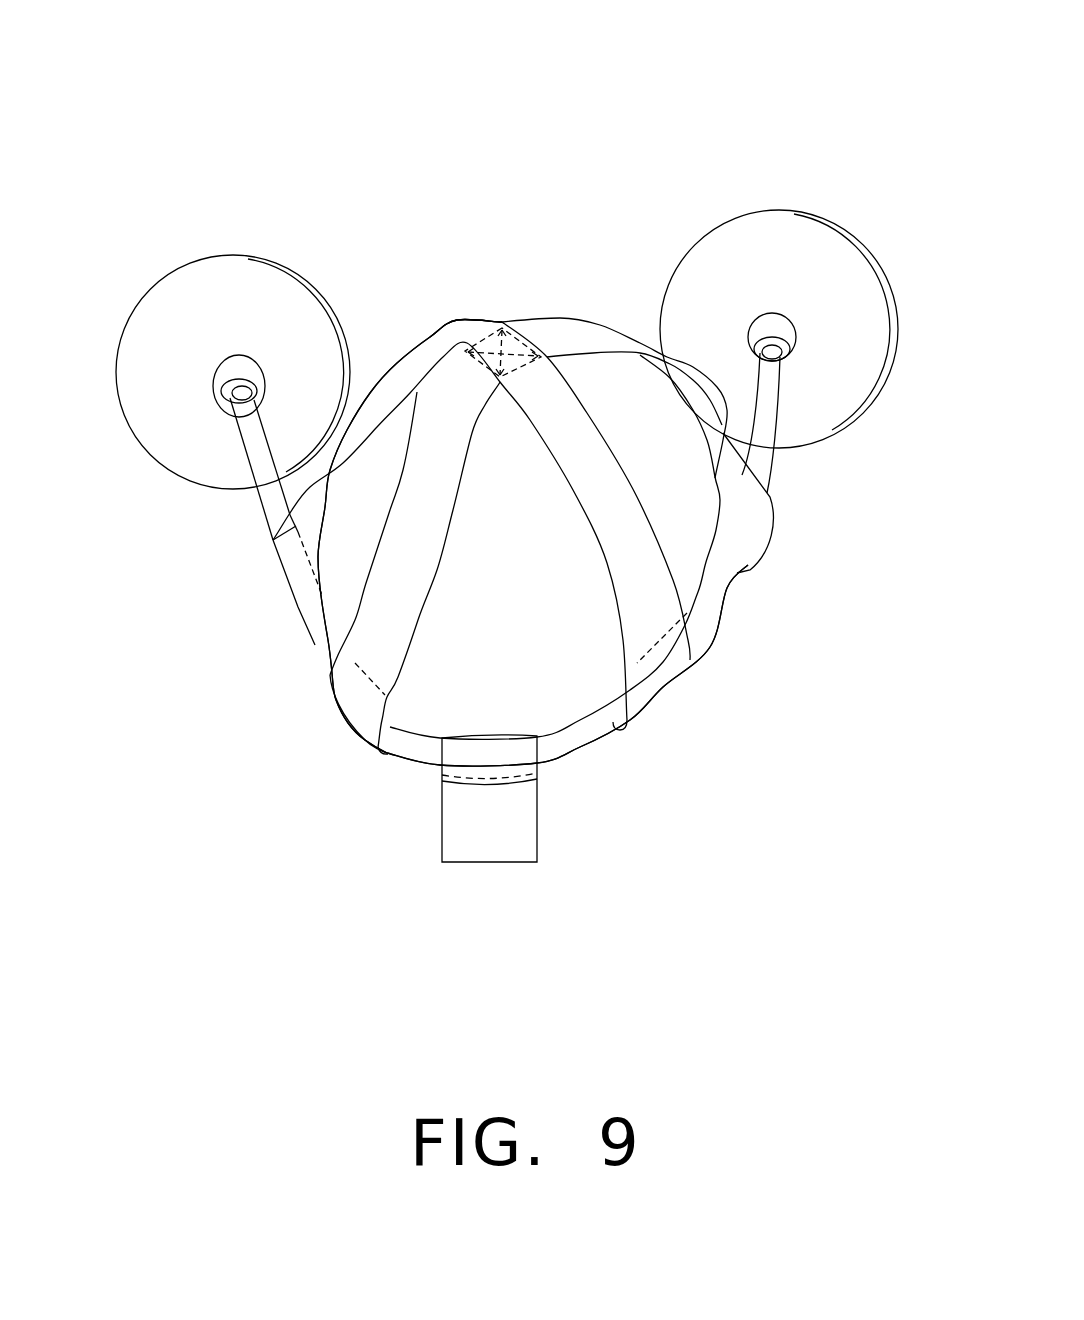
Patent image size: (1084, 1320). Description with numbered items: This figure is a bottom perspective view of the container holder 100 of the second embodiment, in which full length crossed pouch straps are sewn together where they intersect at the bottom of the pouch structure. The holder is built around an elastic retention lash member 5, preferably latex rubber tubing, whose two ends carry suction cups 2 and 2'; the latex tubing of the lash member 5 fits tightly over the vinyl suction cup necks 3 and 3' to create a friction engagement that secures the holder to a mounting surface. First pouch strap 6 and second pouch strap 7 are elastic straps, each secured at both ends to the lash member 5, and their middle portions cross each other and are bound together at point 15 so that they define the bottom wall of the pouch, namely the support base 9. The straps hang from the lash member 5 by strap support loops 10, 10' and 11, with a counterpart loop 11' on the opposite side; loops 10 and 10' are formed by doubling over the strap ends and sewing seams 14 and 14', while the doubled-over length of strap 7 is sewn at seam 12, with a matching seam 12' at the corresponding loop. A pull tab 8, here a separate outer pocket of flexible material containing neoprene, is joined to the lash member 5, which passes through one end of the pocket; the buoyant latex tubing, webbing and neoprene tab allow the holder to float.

The container holder 100 is at (682, 118).
The suction cup 2 is at (218, 336).
The suction cup 2' is at (779, 278).
The suction cup neck 3 is at (199, 447).
The suction cup neck 3' is at (856, 403).
The elastic retention lash member 5 is at (712, 590).
The first pouch strap 6 is at (605, 325).
The second pouch strap 7 is at (398, 362).
The pull tab 8 is at (500, 830).
The support base 9 is at (455, 322).
The strap support loop 10 is at (325, 737).
The strap support loop 10' is at (803, 516).
The support loop 11 is at (678, 744).
The tab 11' is at (249, 595).
The sewing seam 12 is at (298, 685).
The hidden tab edge 12' is at (598, 546).
The sewing seam 14 is at (710, 684).
The sewing seam 14' is at (197, 548).
The binding point 15 is at (510, 330).